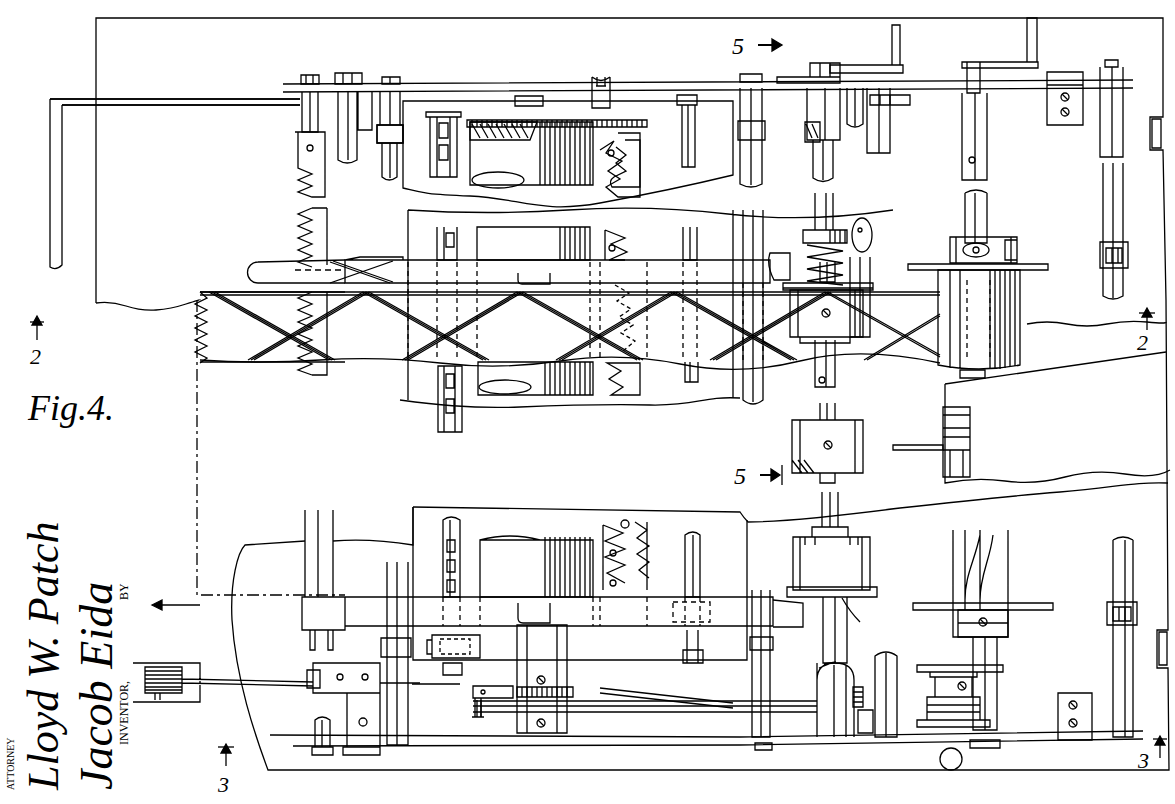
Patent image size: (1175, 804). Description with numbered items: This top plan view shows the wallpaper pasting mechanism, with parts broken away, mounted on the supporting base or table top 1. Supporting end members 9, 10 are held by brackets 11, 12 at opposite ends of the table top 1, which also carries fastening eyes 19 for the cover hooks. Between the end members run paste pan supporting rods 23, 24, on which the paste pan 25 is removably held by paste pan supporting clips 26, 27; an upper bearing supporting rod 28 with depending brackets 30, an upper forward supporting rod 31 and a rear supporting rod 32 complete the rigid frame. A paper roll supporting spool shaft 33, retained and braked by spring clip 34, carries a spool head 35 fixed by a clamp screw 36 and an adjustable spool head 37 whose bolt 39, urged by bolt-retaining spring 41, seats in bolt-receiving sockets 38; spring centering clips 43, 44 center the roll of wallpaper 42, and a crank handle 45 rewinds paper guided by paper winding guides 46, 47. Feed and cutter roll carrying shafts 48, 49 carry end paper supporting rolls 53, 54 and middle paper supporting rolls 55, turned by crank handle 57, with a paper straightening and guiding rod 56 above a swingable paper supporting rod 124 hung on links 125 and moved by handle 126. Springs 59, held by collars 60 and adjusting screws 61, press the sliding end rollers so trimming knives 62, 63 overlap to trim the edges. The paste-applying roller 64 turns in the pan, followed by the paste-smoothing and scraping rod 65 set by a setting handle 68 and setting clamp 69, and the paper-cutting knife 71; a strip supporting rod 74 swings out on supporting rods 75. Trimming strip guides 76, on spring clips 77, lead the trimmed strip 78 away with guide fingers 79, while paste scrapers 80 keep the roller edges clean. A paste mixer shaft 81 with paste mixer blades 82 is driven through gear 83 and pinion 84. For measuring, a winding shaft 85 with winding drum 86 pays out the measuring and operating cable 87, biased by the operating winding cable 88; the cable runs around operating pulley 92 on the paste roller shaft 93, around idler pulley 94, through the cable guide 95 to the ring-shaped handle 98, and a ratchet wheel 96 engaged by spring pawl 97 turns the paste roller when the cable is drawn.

The supporting base or table top 1 is at (633, 394).
The supporting end member 9 is at (418, 746).
The supporting end member 10 is at (470, 84).
The bracket 11 is at (364, 748).
The bracket 12 is at (364, 78).
The fastening eyes 19 is at (1149, 120).
The paste pan supporting rod 23 is at (392, 180).
The paste pan supporting rod 24 is at (798, 140).
The paste pan 25 is at (641, 555).
The paste pan supporting clip 26 is at (380, 143).
The paste pan supporting clip 27 is at (762, 132).
The upper bearing supporting rod 28 is at (805, 168).
The depending brackets 30 is at (793, 77).
The upper forward supporting rod 31 is at (356, 165).
The rear supporting rod 32 is at (1133, 544).
The paper roll supporting spool shaft 33 is at (987, 220).
The spring clip 34 is at (998, 748).
The spool head 35 is at (1026, 610).
The clamp screw 36 is at (1010, 640).
The adjustable spool head 37 is at (1030, 270).
The bolt-receiving sockets 38 is at (975, 160).
The bolt 39 is at (970, 246).
The bolt-retaining spring 41 is at (1017, 248).
The roll of wallpaper 42 is at (1020, 306).
The spring centering clip 43 is at (1000, 554).
The spring centering clip 44 is at (868, 286).
The crank handle 45 is at (1015, 64).
The paper winding guide 46 is at (1100, 258).
The paper winding guide 47 is at (1108, 626).
The upper feed and cutter roll carrying shaft 48 is at (812, 370).
The lower feed and cutter roll carrying shaft 49 is at (814, 386).
The end paper supporting roll 53 is at (870, 556).
The end paper supporting roll 54 is at (876, 584).
The middle paper supporting rolls 55 is at (864, 454).
The paper straightening and guiding rod 56 is at (856, 128).
The crank handle 57 is at (880, 65).
The springs 59 is at (850, 266).
The collars 60 is at (806, 236).
The adjusting screws 61 is at (864, 218).
The trimming knives 62 is at (870, 292).
The trimming knives 63 is at (866, 278).
The paste-applying roller 64 is at (536, 566).
The paste-smoothing and scraping rod 65 is at (438, 384).
The setting handle 68 is at (446, 675).
The setting clamp 69 is at (470, 647).
The paper-cutting knife 71 is at (298, 236).
The strip supporting rod 74 is at (48, 130).
The supporting rods 75 is at (138, 110).
The trimming strip guides 76 is at (399, 262).
The spring clips 77 is at (774, 256).
The trimmed strip 78 is at (258, 270).
The guide fingers 79 is at (523, 273).
The paste scrapers 80 is at (646, 270).
The paste mixer shaft 81 is at (633, 176).
The paste mixer blades 82 is at (635, 144).
The gear 83 is at (500, 122).
The pinion 84 is at (632, 120).
The winding shaft 85 is at (970, 462).
The winding drum 86 is at (1003, 674).
The measuring and operating cable or line 87 is at (700, 700).
The operating winding cable 88 is at (904, 445).
The operating pulley 92 is at (628, 684).
The paste roller shaft 93 is at (548, 733).
The idler pulley 94 is at (860, 687).
The line or cable guide 95 is at (306, 674).
The ratchet wheel 96 is at (590, 684).
The spring pawl 97 is at (493, 689).
The ring-shaped handle 98 is at (142, 663).
The paper supporting rod 124 is at (890, 152).
The links 125 is at (904, 105).
The handle 126 is at (940, 758).